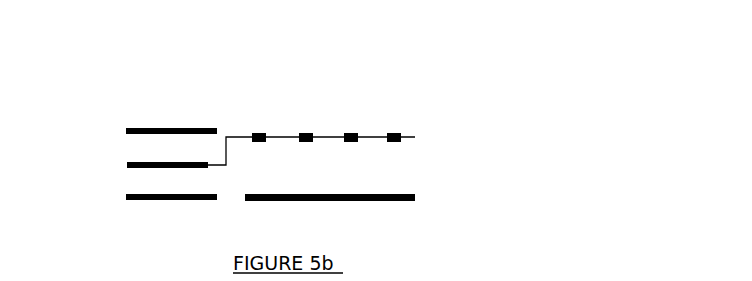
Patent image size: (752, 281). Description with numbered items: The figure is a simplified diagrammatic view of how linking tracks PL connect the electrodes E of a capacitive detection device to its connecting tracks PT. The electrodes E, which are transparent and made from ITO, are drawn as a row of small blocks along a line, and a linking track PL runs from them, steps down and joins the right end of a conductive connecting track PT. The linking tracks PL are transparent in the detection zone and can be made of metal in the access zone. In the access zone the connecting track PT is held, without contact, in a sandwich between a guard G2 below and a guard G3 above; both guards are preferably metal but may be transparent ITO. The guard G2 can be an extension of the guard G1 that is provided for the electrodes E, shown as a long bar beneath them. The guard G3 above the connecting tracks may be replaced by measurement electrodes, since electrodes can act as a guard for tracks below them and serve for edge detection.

The guard G3 is at (143, 128).
The connecting tracks PT is at (138, 162).
The guard G2 is at (147, 201).
The guard G1 is at (388, 201).
The linking tracks PL is at (226, 137).
The electrodes E is at (390, 133).